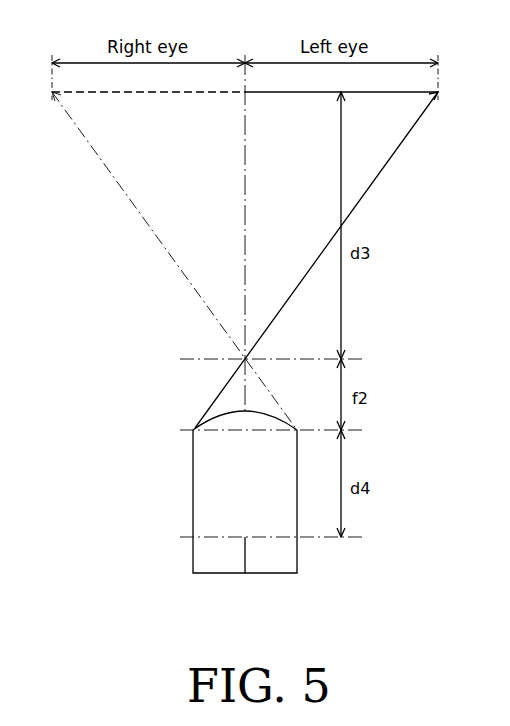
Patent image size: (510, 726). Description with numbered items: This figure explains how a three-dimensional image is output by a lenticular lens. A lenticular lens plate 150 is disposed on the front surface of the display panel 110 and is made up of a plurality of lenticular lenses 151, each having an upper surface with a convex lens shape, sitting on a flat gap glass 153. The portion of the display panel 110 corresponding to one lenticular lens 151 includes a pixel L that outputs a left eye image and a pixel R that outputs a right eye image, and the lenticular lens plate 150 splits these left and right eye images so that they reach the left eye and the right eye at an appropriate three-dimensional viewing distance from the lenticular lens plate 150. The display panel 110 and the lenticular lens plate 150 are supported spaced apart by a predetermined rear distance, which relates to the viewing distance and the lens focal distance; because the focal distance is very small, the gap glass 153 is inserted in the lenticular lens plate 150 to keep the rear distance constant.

The lenticular lens plate 150 is at (120, 423).
The lenticular lens 151 is at (227, 421).
The gap glass 153 is at (200, 505).
The display panel 110 is at (200, 554).